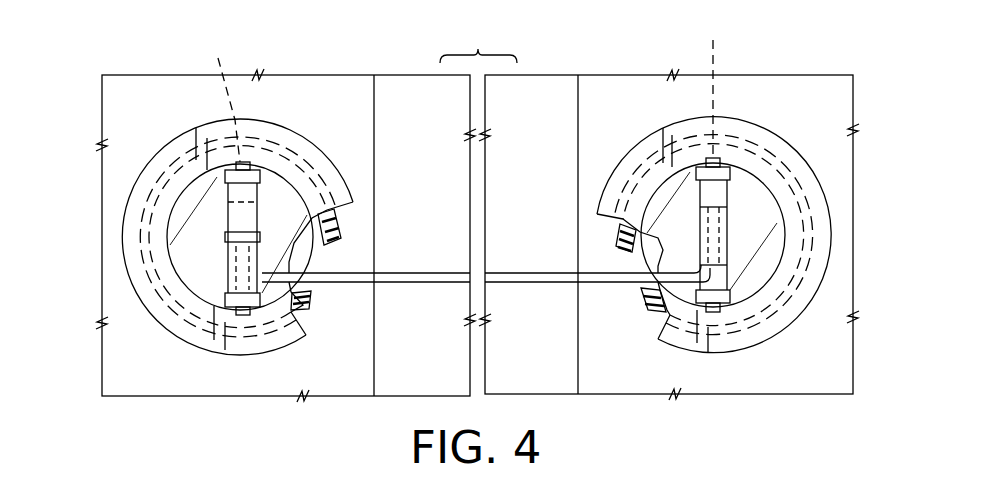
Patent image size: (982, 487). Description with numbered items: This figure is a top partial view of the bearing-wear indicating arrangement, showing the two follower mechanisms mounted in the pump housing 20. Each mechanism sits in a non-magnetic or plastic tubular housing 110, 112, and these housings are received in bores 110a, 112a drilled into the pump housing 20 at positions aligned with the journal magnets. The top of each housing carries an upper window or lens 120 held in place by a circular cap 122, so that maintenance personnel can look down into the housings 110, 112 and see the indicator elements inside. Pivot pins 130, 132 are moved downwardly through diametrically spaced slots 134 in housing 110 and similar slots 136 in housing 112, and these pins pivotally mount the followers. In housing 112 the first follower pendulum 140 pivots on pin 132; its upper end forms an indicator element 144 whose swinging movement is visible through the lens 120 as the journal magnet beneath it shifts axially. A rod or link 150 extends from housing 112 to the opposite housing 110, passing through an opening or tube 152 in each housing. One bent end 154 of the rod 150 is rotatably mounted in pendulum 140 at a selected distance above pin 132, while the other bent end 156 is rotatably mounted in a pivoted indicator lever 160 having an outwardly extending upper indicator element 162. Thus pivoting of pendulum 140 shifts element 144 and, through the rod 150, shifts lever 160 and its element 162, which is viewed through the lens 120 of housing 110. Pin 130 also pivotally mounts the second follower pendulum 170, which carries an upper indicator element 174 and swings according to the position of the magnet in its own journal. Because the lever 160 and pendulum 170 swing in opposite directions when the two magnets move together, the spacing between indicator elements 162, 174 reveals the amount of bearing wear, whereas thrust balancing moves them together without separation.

The pump housing 20 is at (624, 73).
The tubular housing 110 is at (273, 118).
The bore 110a is at (297, 302).
The tubular housing 112 is at (735, 115).
The bore 112a is at (622, 238).
The upper window or lens 120 is at (190, 268).
The circular cap 122 is at (225, 357).
The pivot pin 130 is at (247, 162).
The pivot pin 132 is at (718, 163).
The slots 134 is at (213, 97).
The slots 136 is at (716, 86).
The pendulum 140 is at (728, 196).
The indicator element 144 is at (727, 218).
The rod or link 150 is at (440, 283).
The opening or tube 152 is at (322, 258).
The bent end 154 is at (727, 265).
The bent end 156 is at (335, 220).
The indicator lever 160 is at (228, 255).
The indicator element 162 is at (238, 278).
The pendulum 170 is at (228, 215).
The indicator element 174 is at (258, 196).